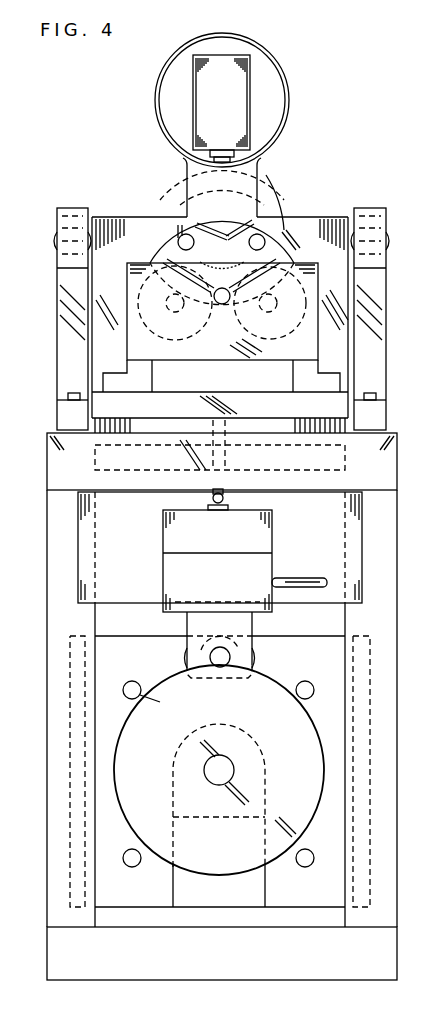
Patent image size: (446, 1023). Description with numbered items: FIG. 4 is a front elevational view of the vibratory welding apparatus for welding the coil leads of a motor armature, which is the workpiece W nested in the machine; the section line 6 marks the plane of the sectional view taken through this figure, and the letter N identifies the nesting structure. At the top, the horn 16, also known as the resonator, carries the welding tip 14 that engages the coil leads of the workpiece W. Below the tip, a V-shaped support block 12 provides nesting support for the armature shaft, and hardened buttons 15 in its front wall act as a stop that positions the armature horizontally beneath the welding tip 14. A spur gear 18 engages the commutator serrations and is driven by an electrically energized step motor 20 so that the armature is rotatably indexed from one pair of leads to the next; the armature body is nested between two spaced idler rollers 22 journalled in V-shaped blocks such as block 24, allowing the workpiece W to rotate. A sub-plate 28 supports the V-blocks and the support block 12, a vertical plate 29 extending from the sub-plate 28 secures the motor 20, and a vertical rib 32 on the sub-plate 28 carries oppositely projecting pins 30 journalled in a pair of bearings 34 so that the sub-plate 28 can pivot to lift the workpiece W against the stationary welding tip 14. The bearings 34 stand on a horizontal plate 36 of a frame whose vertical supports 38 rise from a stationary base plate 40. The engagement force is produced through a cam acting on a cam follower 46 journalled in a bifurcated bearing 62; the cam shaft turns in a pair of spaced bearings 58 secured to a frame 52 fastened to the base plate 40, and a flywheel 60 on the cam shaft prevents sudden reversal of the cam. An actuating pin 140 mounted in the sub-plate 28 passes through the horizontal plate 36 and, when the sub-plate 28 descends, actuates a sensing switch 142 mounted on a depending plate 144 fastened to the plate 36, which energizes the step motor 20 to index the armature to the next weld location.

The nut N is at (128, 204).
The workpiece W is at (272, 198).
The section line 6- 6 is at (230, 222).
The V-shaped support block 12 is at (185, 220).
The welding tip 14 is at (232, 167).
The hardened buttons 15 is at (183, 242).
The horn 16 is at (234, 110).
The spur gear 18 is at (220, 272).
The step motor 20 is at (288, 256).
The idler rollers 22 is at (146, 298).
The V-shaped block 24 is at (312, 318).
The sub-plate 28 is at (333, 412).
The vertical plate 29 is at (283, 252).
The pins 30 is at (54, 240).
The vertical rib 32 is at (340, 288).
The bearings 34 is at (63, 336).
The horizontal plate 36 is at (60, 462).
The vertical supports 38 is at (52, 547).
The base plate 40 is at (222, 970).
The cam follower 46 is at (255, 657).
The frame 52 is at (290, 918).
The bearings 58 is at (258, 887).
The flywheel 60 is at (169, 727).
The bifurcated bearing 62 is at (250, 625).
The actuating pin 140 is at (233, 493).
The sensing switch 142 is at (232, 542).
The depending plate 144 is at (327, 543).